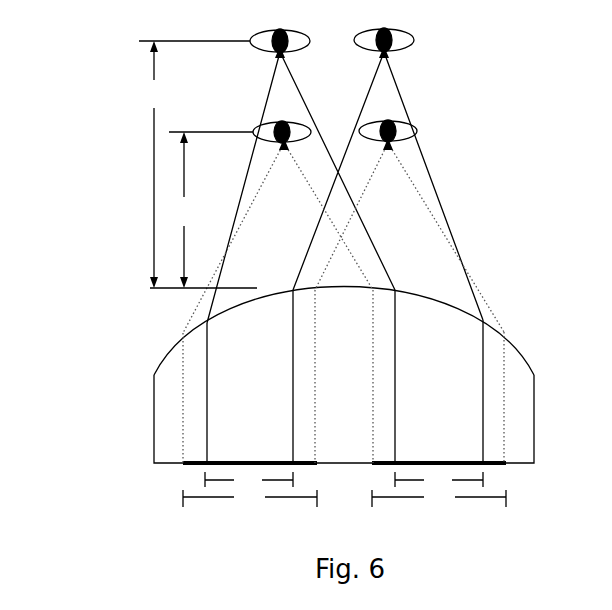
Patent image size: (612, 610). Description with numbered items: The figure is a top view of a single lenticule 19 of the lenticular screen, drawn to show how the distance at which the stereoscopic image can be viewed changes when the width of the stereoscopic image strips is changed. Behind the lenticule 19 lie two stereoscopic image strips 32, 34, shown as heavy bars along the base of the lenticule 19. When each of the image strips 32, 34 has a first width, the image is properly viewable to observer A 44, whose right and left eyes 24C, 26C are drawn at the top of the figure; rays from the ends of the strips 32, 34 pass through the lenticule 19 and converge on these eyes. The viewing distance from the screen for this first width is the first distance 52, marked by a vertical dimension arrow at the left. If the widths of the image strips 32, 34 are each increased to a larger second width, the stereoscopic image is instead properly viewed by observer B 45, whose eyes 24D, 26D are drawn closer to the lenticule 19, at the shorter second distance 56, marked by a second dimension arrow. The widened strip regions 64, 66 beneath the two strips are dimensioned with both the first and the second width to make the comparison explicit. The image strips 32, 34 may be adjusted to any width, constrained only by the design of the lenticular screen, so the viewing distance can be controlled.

The lenticule 19 is at (170, 375).
The right eye of observer A 24C is at (257, 48).
The left eye of observer A 26C is at (402, 47).
The right eye of observer B 24D is at (265, 138).
The left eye of observer B 26D is at (402, 140).
The observer A 44 is at (371, 43).
The observer B 45 is at (380, 134).
The distance D1 52 is at (147, 67).
The distance D2 56 is at (190, 177).
The stereoscopic image strip 32 is at (256, 460).
The stereoscopic image strip 34 is at (446, 460).
The first emitter region width W' 64 is at (250, 505).
The second emitter region width W' 66 is at (439, 505).